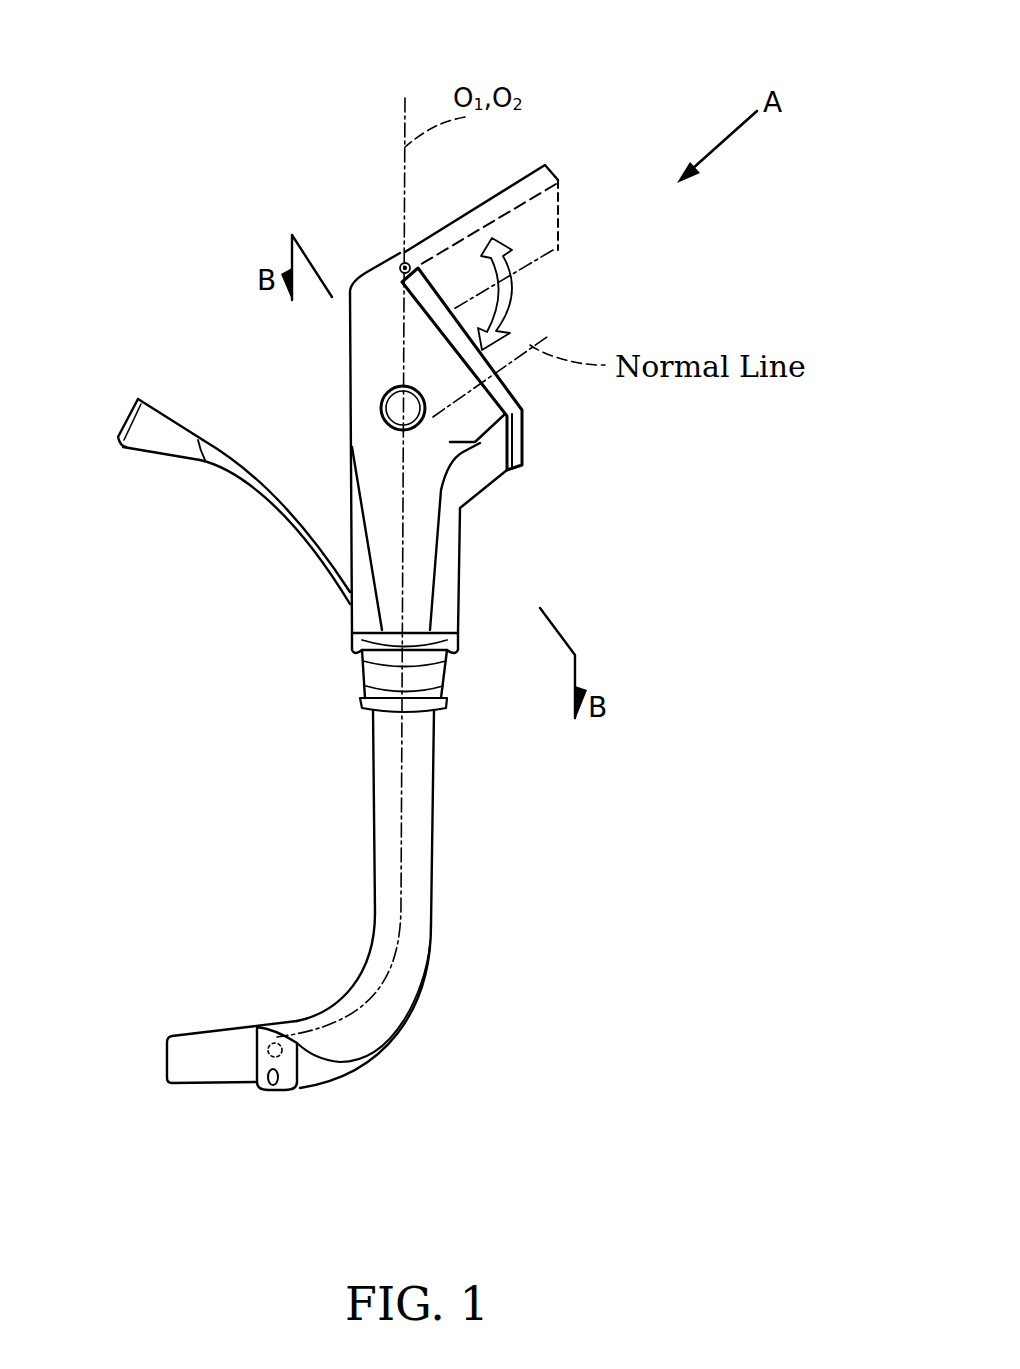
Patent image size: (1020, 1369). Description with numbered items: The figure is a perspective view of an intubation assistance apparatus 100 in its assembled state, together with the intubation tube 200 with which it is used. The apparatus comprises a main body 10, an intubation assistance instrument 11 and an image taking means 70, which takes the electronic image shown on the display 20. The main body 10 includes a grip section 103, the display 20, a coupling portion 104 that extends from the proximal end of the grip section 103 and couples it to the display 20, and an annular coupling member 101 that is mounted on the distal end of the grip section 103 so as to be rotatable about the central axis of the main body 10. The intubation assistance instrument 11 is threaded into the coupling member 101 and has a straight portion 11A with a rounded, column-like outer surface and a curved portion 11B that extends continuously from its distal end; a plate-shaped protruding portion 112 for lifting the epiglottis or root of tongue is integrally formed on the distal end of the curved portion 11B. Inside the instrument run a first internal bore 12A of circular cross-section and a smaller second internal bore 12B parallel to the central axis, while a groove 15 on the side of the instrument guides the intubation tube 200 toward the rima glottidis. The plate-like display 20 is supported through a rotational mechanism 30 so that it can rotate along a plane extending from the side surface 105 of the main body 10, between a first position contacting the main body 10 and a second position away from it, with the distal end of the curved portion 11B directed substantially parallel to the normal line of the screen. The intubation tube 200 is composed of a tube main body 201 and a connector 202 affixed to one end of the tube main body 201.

The intubation assistance apparatus 100 is at (595, 118).
The main body 10 is at (479, 493).
The intubation assistance instrument 11 is at (436, 825).
The straight portion 11A is at (422, 780).
The curved portion 11B is at (367, 1007).
The first internal bore 12A is at (297, 1052).
The second internal bore 12B is at (257, 1053).
The groove 15 is at (273, 1085).
The display 20 is at (548, 248).
The rotational mechanism 30 is at (400, 252).
The image taking means 70 is at (382, 454).
The coupling member 101 is at (432, 658).
The grip section 103 is at (468, 522).
The coupling portion 104 is at (382, 368).
The side surface 105 is at (505, 472).
The protruding portion 112 is at (200, 1067).
The intubation tube 200 is at (271, 508).
The tube main body 201 is at (165, 438).
The connector 202 is at (330, 548).